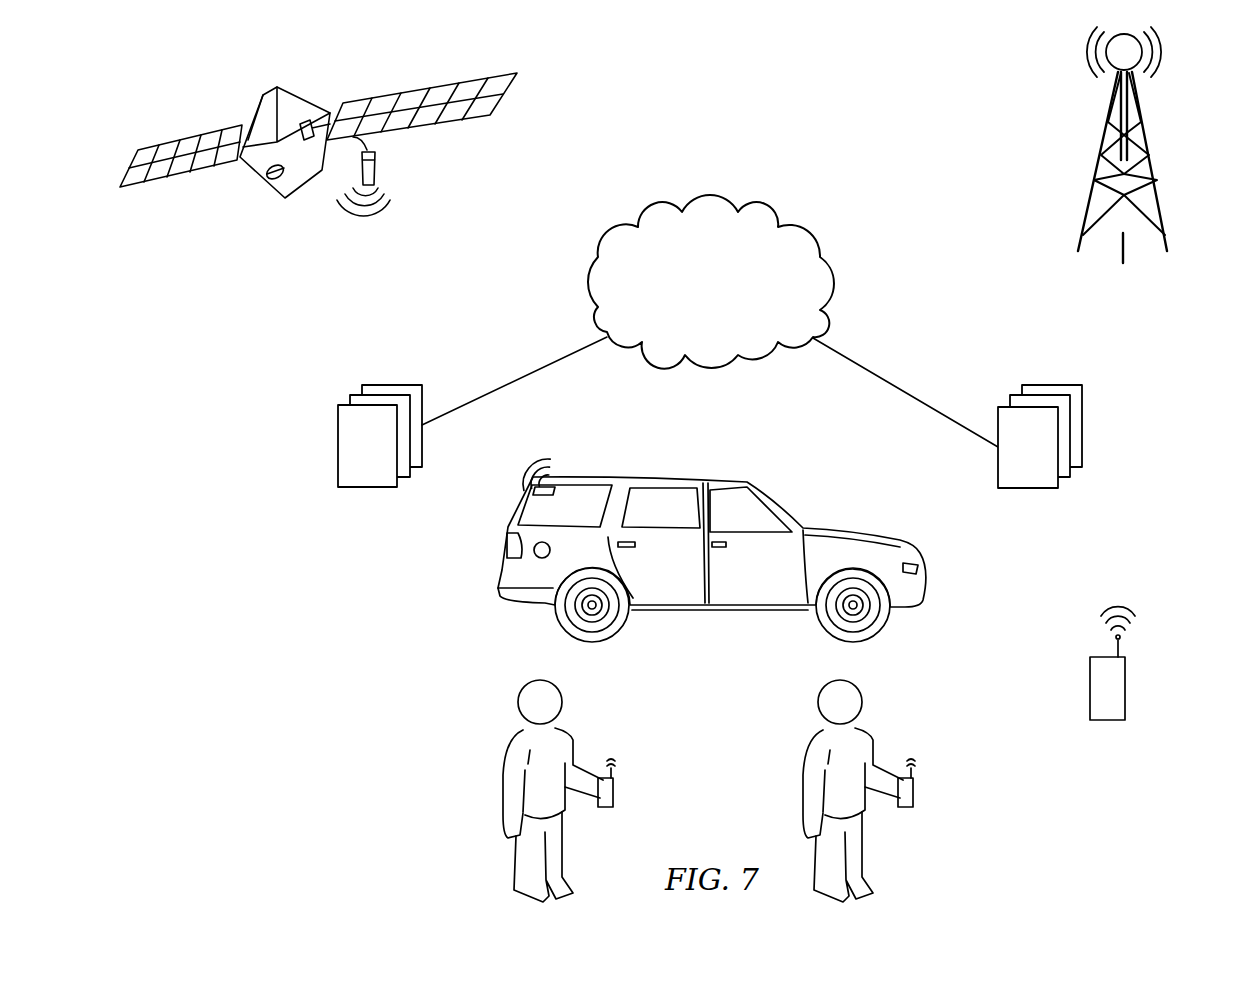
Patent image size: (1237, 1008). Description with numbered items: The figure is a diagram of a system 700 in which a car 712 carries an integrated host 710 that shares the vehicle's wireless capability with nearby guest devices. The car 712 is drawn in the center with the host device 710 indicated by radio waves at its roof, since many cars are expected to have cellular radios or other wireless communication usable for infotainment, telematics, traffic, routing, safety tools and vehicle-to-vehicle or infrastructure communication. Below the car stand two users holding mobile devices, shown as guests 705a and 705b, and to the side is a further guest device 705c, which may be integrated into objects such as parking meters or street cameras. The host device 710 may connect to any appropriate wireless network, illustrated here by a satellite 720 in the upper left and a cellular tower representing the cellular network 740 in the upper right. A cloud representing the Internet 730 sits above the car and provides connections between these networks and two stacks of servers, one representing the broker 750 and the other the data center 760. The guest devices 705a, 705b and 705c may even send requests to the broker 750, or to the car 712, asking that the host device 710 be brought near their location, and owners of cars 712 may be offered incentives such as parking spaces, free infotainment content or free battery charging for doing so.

The system 700 is at (827, 104).
The guest device 705a is at (606, 807).
The guest device 705b is at (906, 807).
The guest device 705c is at (1126, 686).
The host device 710 is at (560, 470).
The car 712 is at (722, 618).
The satellite 720 is at (268, 186).
The Internet 730 is at (724, 293).
The cellular 740 is at (1150, 126).
The broker 750 is at (338, 441).
The data center 760 is at (1083, 415).